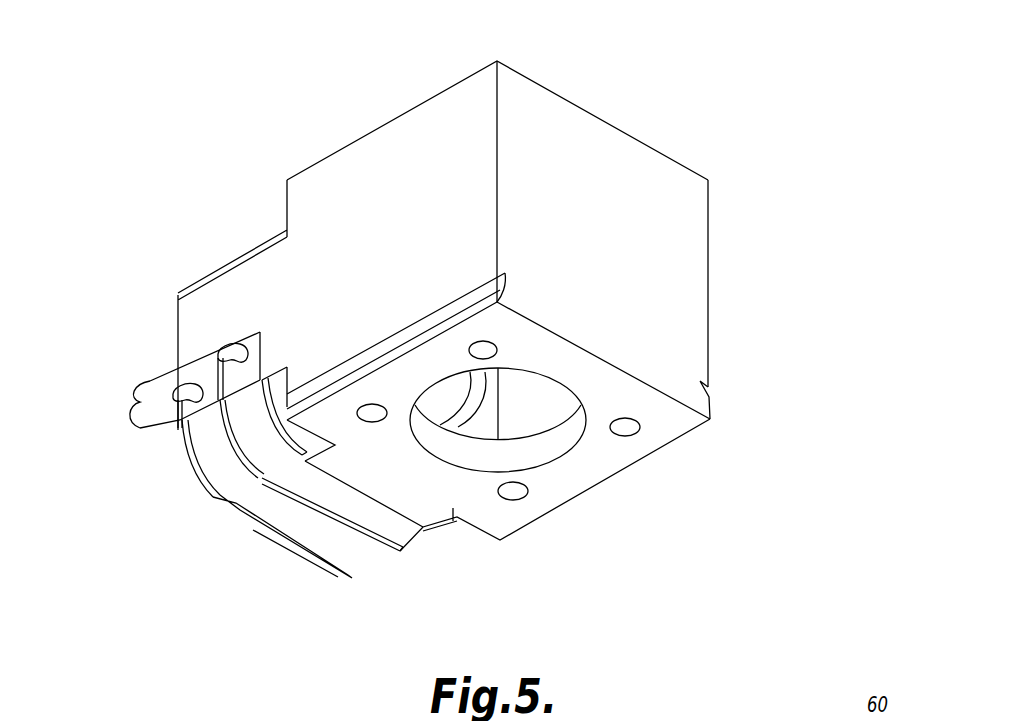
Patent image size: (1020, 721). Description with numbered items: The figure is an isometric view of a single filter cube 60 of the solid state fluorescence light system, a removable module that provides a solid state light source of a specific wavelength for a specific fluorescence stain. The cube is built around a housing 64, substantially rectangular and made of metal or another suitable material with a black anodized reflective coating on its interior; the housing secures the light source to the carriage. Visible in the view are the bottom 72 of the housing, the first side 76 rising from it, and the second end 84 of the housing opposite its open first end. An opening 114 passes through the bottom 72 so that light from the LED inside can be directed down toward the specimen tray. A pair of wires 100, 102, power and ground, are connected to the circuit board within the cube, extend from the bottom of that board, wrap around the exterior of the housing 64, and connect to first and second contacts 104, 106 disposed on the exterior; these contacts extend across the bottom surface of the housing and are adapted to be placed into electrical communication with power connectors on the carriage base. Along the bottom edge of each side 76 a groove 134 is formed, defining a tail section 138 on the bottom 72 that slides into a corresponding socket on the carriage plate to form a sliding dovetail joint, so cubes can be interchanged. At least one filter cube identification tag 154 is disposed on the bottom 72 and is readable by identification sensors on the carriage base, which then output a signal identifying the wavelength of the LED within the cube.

The filter cube 60 is at (667, 114).
The housing 64 is at (708, 281).
The bottom 72 is at (450, 505).
The first side 76 is at (372, 158).
The second end 84 is at (605, 145).
The wire 100 is at (128, 398).
The wire 102 is at (153, 390).
The first contact 104 is at (220, 497).
The second contact 106 is at (263, 478).
The opening 114 is at (540, 448).
The groove 134 is at (458, 293).
The tail section 138 is at (662, 342).
The filter cube identification tag 154 is at (477, 350).